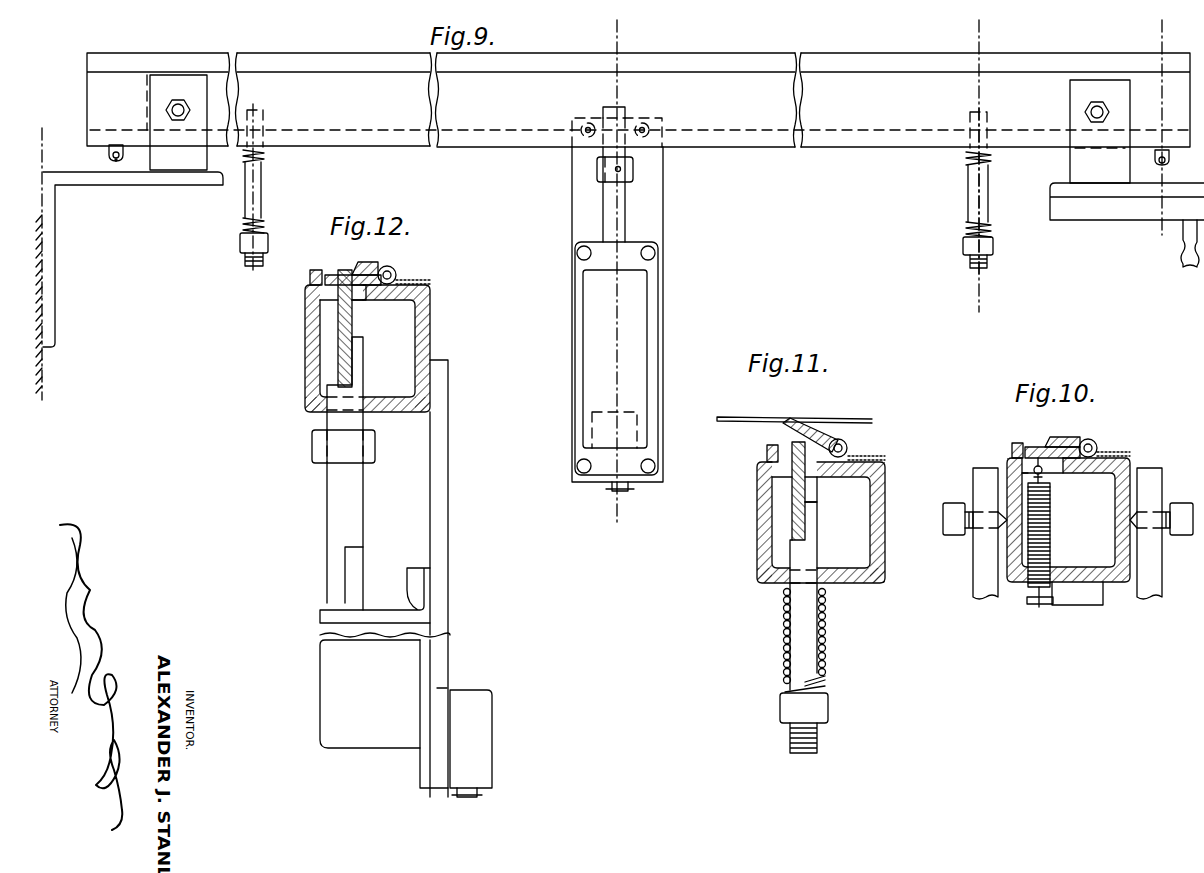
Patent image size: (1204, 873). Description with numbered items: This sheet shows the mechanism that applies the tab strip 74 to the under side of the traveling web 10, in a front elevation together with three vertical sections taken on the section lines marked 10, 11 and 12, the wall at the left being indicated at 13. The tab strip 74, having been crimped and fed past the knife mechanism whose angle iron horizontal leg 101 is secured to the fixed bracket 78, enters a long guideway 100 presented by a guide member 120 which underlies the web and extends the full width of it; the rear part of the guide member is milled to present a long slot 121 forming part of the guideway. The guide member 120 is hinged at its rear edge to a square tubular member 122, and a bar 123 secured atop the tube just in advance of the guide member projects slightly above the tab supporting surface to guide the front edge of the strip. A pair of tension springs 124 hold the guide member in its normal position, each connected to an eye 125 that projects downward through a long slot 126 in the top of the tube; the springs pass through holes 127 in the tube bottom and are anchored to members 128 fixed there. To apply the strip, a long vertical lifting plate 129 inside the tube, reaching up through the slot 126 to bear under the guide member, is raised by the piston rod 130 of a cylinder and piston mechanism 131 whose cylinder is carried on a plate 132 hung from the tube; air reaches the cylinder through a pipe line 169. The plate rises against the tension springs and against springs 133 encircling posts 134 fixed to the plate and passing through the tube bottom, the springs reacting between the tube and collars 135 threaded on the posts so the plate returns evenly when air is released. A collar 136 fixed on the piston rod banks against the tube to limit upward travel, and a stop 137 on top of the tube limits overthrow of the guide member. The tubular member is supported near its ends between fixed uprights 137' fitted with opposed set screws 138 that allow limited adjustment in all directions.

In FIG. 9, the traveling web 10 is at (1200, 48).
In FIG. 11, the traveling web 10 is at (847, 407).
In FIG. 9, the section line 11— 11 is at (1016, 48).
In FIG. 9, the section line 12— 12 is at (655, 48).
In FIG. 9, the wall 13 is at (42, 362).
In FIG. 11, the tab strip 74 is at (800, 425).
In FIG. 9, the fixed bracket 78 is at (1093, 213).
In FIG. 10, the guideway 100 is at (1036, 440).
In FIG. 9, the horizontal leg 101 is at (1056, 187).
In FIG. 9, the guide member 120 is at (745, 62).
In FIG. 12, the guide member 120 is at (344, 275).
In FIG. 11, the guide member 120 is at (788, 428).
In FIG. 10, the guide member 120 is at (1025, 452).
In FIG. 12, the long slot 121 is at (367, 262).
In FIG. 10, the long slot 121 is at (1064, 438).
In FIG. 9, the tubular member 122 is at (760, 143).
In FIG. 12, the tubular member 122 is at (427, 329).
In FIG. 11, the tubular member 122 is at (886, 481).
In FIG. 10, the tubular member 122 is at (1120, 584).
In FIG. 9, the bar 123 is at (824, 64).
In FIG. 12, the bar 123 is at (310, 279).
In FIG. 11, the bar 123 is at (767, 453).
In FIG. 10, the bar 123 is at (1016, 443).
In FIG. 9, the tension springs 124 is at (108, 151).
In FIG. 10, the tension springs 124 is at (1052, 527).
In FIG. 10, the eye 125 is at (1044, 473).
In FIG. 12, the long slot 126 is at (360, 300).
In FIG. 11, the long slot 126 is at (812, 468).
In FIG. 10, the long slot 126 is at (1022, 470).
In FIG. 10, the holes 127 is at (1060, 572).
In FIG. 9, the anchoring members 128 is at (117, 166).
In FIG. 10, the anchoring members 128 is at (1046, 604).
In FIG. 9, the lifting plate 129 is at (887, 142).
In FIG. 12, the lifting plate 129 is at (338, 325).
In FIG. 11, the lifting plate 129 is at (792, 492).
In FIG. 9, the piston rod 130 is at (603, 202).
In FIG. 12, the piston rod 130 is at (330, 497).
In FIG. 9, the cylinder and piston mechanism 131 is at (616, 358).
In FIG. 12, the cylinder and piston mechanism 131 is at (406, 678).
In FIG. 9, the plate 132 is at (664, 213).
In FIG. 12, the plate 132 is at (440, 429).
In FIG. 9, the springs 133 is at (266, 157).
In FIG. 11, the springs 133 is at (826, 629).
In FIG. 9, the vertical posts 134 is at (262, 189).
In FIG. 11, the vertical posts 134 is at (800, 607).
In FIG. 9, the collars 135 is at (268, 244).
In FIG. 11, the collars 135 is at (783, 705).
In FIG. 9, the collar 136 is at (634, 170).
In FIG. 12, the collar 136 is at (312, 446).
In FIG. 12, the stop 137 is at (406, 262).
In FIG. 11, the stop 137 is at (861, 444).
In FIG. 10, the stop 137 is at (1106, 437).
In FIG. 9, the fixed uprights 137' is at (638, 129).
In FIG. 10, the fixed uprights 137' is at (1054, 549).
In FIG. 9, the set screws 138 is at (179, 102).
In FIG. 10, the set screws 138 is at (952, 530).
In FIG. 9, the pipe line 169 is at (612, 487).
In FIG. 12, the pipe line 169 is at (480, 792).